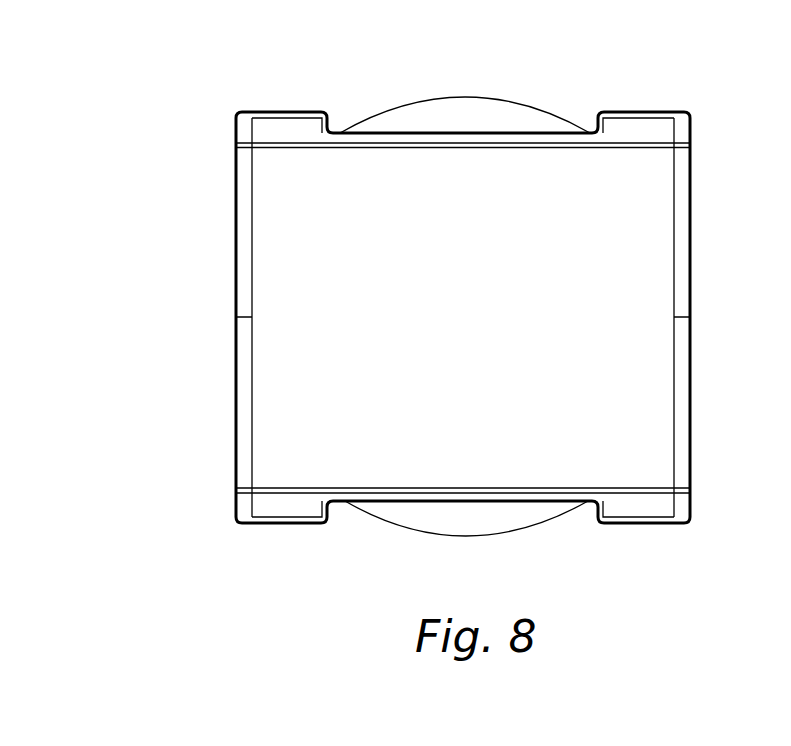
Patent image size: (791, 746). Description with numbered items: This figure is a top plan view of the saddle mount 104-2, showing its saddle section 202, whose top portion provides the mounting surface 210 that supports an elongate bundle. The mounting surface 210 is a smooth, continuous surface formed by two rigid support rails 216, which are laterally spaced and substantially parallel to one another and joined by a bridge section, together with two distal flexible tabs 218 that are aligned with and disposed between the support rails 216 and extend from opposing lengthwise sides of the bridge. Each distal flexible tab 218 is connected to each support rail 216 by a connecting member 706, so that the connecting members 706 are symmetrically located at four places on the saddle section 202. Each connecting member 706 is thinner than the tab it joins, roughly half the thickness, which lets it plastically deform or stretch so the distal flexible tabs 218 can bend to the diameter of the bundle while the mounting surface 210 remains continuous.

The saddle mount 104-2 is at (162, 38).
The saddle section 202 is at (224, 141).
The mounting surface 210 is at (332, 274).
The support rails 216 is at (287, 112).
The distal flexible tabs 218 is at (462, 132).
The connecting member 706 is at (345, 131).